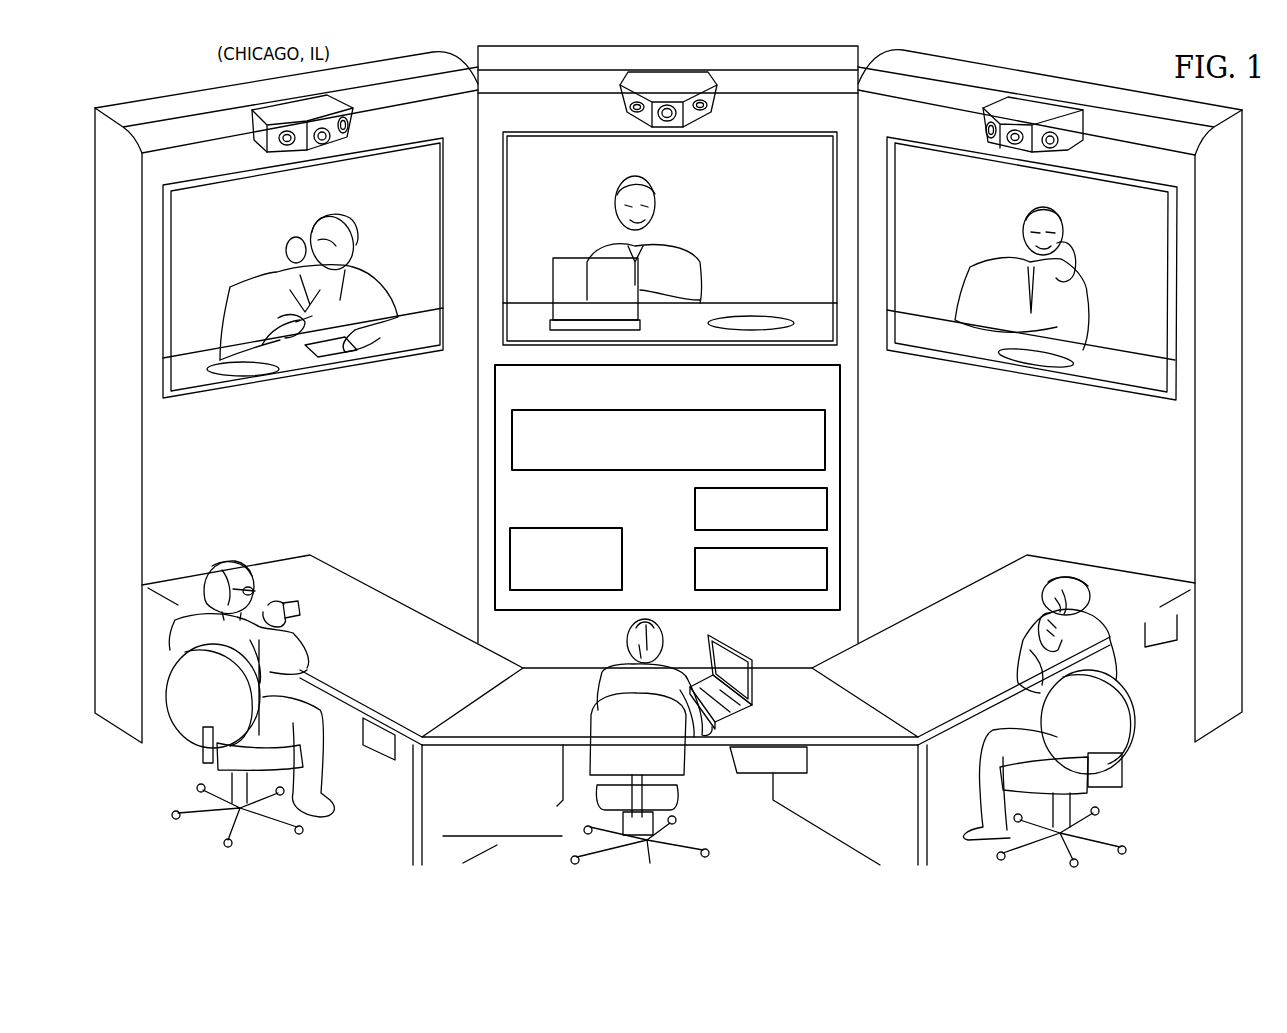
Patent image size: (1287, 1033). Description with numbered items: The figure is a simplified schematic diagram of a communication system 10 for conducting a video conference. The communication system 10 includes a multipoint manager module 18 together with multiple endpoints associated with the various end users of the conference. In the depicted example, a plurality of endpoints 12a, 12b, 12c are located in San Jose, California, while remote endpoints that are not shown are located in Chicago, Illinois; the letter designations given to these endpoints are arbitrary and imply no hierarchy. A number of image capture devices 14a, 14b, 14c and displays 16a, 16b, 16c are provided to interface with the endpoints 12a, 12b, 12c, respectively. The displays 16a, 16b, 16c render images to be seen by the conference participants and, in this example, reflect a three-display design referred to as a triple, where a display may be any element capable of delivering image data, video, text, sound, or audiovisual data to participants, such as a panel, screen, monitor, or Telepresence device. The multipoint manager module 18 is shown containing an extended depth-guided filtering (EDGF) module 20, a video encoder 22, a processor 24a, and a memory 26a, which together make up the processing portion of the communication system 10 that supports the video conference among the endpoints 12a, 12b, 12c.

The communication system 10 is at (141, 88).
The endpoint 12a is at (375, 742).
The endpoint 12b is at (758, 765).
The endpoint 12c is at (1160, 632).
The image capture device 14a is at (253, 121).
The image capture device 14b is at (717, 100).
The image capture device 14c is at (1085, 124).
The display 16a is at (412, 201).
The display 16b is at (580, 181).
The display 16c is at (1137, 221).
The multipoint manager module 18 is at (490, 489).
The extended depth-guided filtering (EDGF) module 20 is at (609, 471).
The video encoder 22 is at (622, 560).
The processor 24a is at (695, 505).
The memory 26a is at (695, 573).